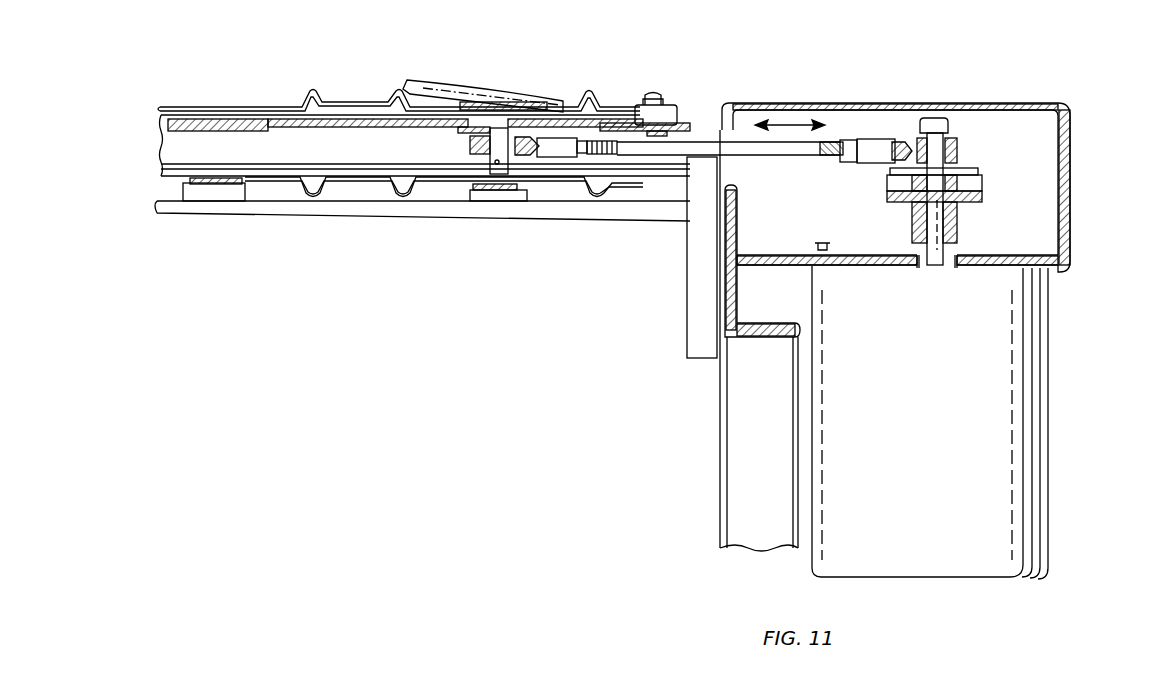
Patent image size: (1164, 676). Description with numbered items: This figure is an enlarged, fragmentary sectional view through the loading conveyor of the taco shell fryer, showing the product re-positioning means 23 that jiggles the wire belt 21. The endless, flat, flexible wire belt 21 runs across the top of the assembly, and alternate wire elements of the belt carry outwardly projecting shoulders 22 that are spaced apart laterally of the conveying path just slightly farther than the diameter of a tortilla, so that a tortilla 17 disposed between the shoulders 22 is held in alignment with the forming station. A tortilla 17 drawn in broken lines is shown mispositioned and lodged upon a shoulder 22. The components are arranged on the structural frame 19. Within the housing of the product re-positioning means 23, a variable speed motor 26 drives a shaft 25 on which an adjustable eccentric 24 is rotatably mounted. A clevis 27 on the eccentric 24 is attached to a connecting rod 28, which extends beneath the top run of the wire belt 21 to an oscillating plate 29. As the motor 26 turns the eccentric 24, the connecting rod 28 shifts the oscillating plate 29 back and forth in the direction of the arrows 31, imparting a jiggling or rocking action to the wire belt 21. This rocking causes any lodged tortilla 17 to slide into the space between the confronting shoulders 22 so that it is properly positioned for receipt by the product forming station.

The tortilla 17 is at (440, 80).
The structural frame 19 is at (720, 466).
The wire belt 21 is at (630, 105).
The shoulders 22 is at (396, 93).
The product re-positioning means 23 is at (1055, 423).
The adjustable eccentric 24 is at (960, 168).
The shaft 25 is at (928, 222).
The variable speed motor 26 is at (930, 422).
The clevis 27 is at (876, 140).
The connecting rod 28 is at (811, 157).
The oscillating plate 29 is at (230, 130).
The arrows 31 is at (790, 122).